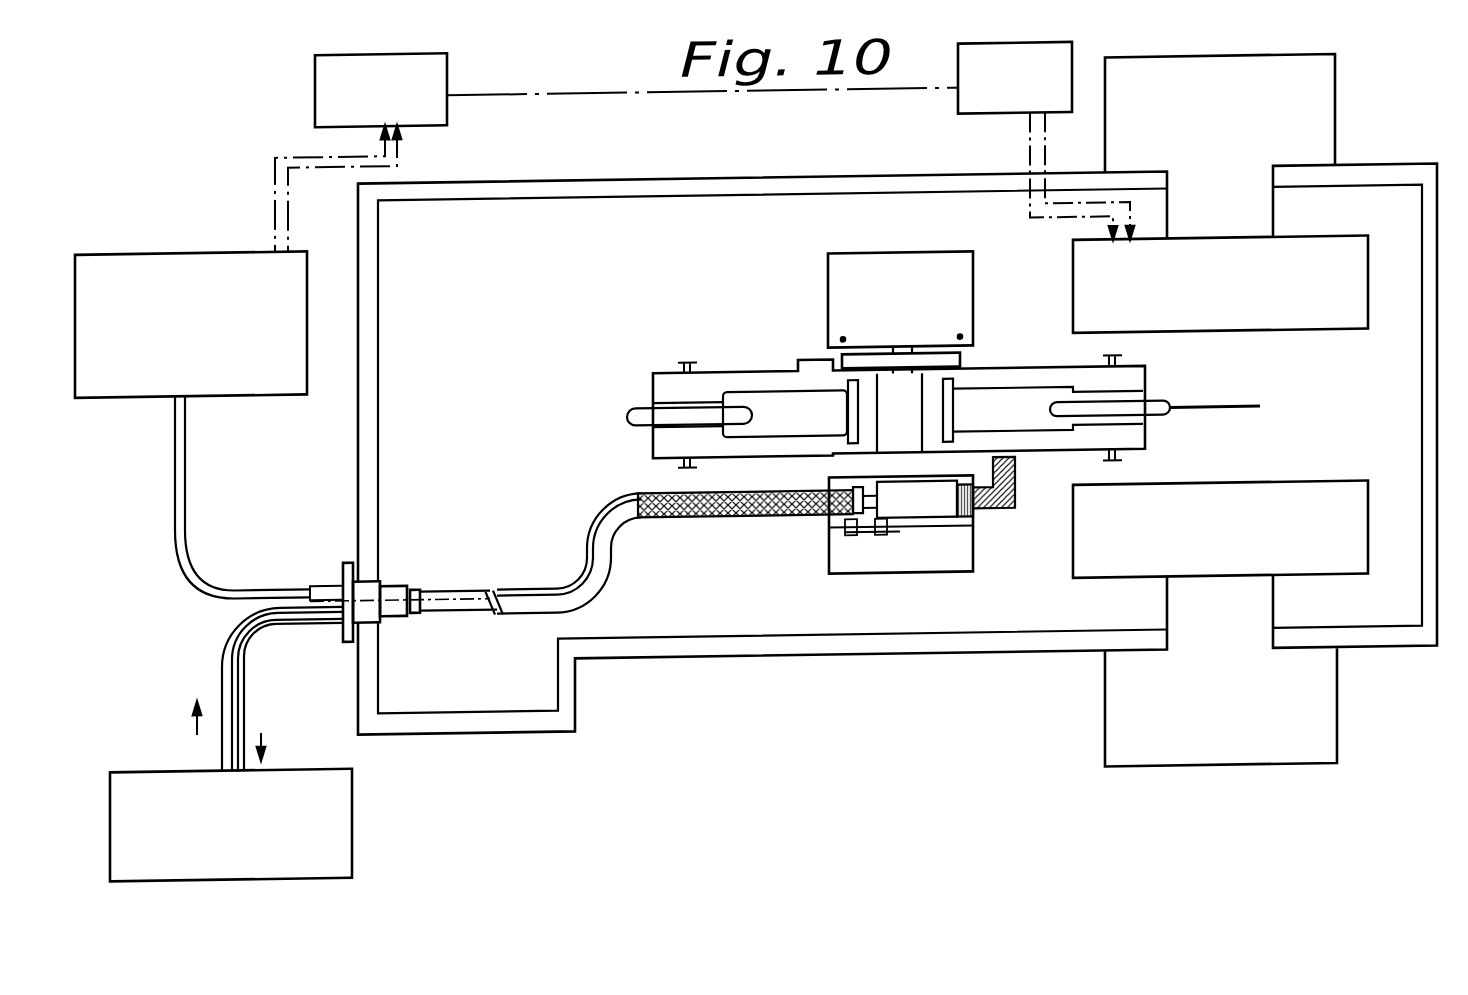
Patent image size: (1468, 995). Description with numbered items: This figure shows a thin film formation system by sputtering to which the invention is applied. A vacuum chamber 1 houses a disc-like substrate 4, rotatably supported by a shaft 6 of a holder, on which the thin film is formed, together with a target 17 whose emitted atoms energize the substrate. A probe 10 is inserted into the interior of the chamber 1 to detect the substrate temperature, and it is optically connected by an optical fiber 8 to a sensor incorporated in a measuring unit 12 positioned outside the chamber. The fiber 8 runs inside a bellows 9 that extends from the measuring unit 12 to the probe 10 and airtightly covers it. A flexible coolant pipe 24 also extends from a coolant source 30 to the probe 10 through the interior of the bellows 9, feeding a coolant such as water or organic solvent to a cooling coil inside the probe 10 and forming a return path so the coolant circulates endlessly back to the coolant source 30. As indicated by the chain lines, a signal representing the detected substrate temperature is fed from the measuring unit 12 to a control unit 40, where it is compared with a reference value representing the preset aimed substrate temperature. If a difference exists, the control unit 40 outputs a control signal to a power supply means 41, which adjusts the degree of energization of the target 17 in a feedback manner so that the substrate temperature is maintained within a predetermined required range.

The vacuum chamber 1 is at (900, 158).
The disc-like substrate 4 is at (1237, 410).
The shaft 6 is at (1122, 362).
The optical fiber 8 is at (185, 445).
The bellows 9 is at (700, 515).
The probe 10 is at (935, 511).
The measuring unit 12 is at (193, 246).
The target 17 is at (1310, 491).
The flexible coolant pipe 24 is at (246, 652).
The coolant source 30 is at (352, 824).
The control unit 40 is at (447, 60).
The power supply means 41 is at (1072, 46).